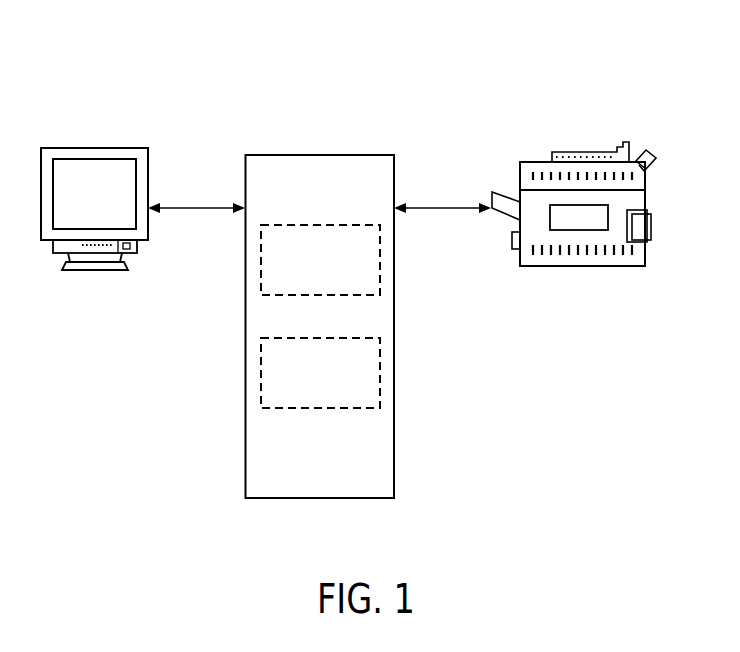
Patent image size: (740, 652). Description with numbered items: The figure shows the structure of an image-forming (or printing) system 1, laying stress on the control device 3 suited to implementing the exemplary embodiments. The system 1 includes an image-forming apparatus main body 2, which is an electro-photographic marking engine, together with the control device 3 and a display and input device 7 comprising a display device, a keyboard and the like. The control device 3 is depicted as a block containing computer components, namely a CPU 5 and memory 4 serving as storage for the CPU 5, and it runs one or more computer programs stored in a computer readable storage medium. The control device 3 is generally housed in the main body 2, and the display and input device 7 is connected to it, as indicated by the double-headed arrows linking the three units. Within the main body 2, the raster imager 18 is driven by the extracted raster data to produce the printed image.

The image-forming system 1 is at (387, 92).
The image-forming apparatus main body 2 is at (645, 258).
The control device 3 is at (245, 326).
The memory 4 is at (380, 362).
The CPU 5 is at (380, 265).
The display and input device 7 is at (148, 168).
The raster imager 18 is at (577, 220).